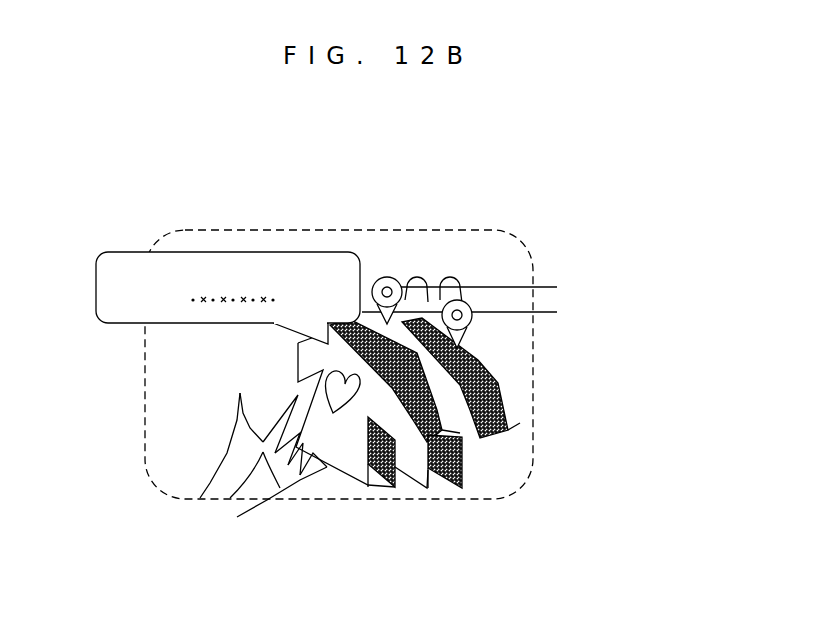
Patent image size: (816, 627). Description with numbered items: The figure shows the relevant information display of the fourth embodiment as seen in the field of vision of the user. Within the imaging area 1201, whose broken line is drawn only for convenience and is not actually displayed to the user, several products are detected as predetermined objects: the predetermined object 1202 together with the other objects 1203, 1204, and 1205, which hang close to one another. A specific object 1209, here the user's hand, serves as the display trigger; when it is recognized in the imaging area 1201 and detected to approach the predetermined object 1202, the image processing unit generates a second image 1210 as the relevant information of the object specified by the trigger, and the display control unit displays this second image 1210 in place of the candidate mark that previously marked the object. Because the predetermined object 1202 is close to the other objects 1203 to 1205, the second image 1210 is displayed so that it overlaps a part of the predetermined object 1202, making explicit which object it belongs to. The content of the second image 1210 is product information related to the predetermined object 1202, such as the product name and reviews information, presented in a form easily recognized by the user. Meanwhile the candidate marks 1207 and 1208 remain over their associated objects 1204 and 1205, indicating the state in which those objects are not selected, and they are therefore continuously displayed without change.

The imaging area 1201 is at (535, 400).
The predetermined object 1202 is at (340, 477).
The other object 1203 is at (382, 478).
The predetermined object 1204 is at (407, 477).
The predetermined object 1205 is at (448, 480).
The candidate mark 1207 is at (387, 276).
The candidate mark 1208 is at (471, 304).
The specific object 1209 is at (266, 508).
The second image 1210 is at (208, 250).